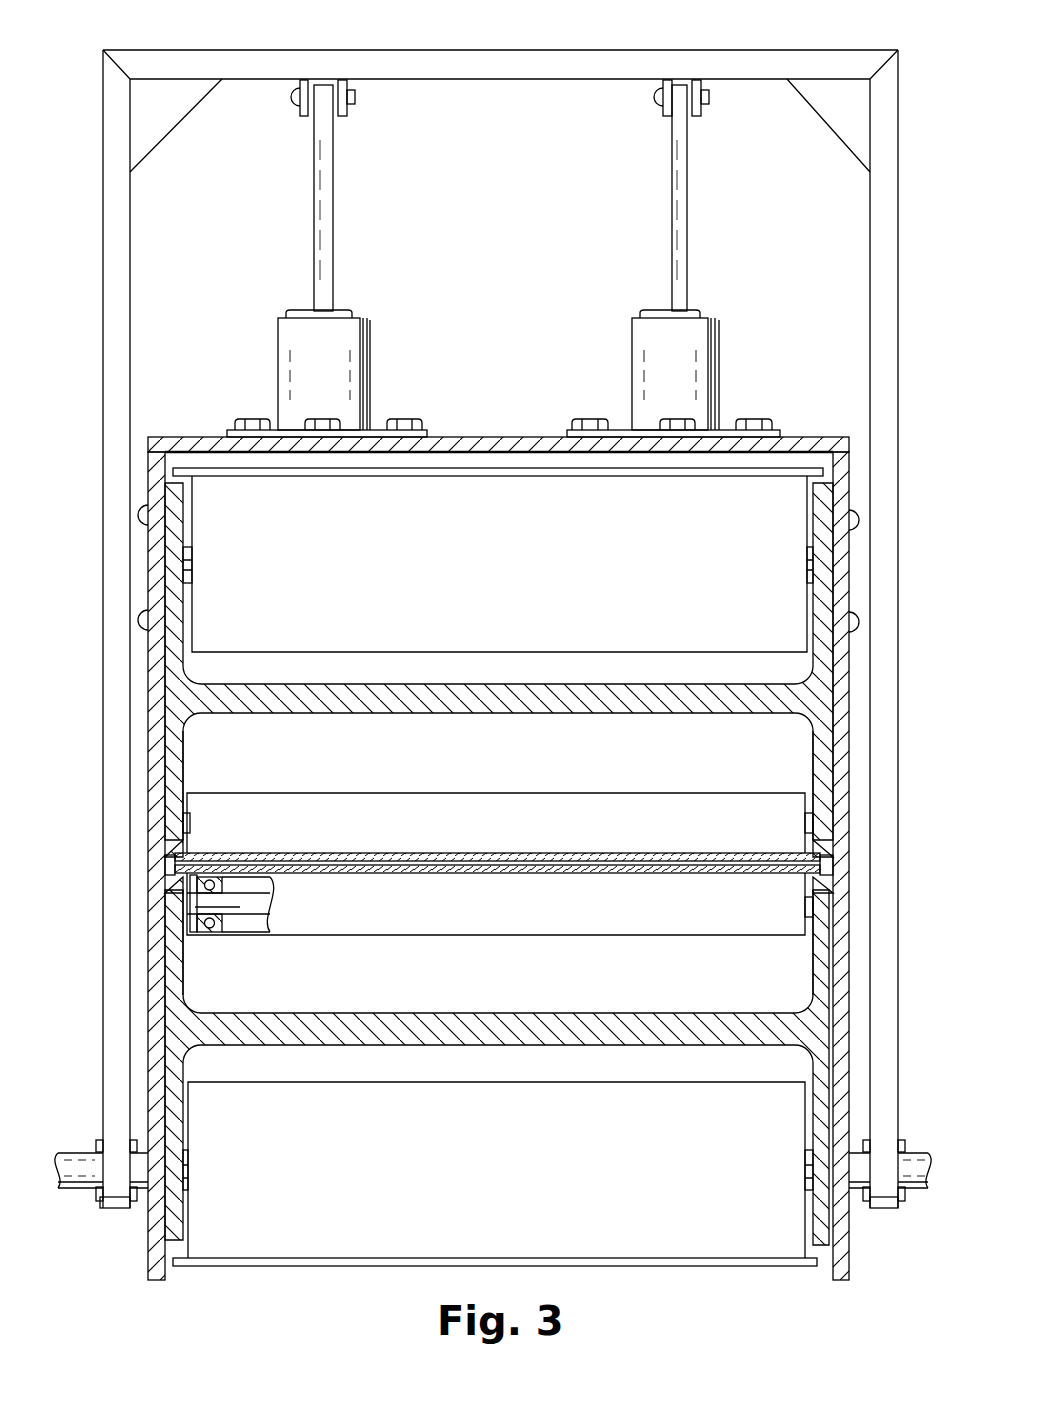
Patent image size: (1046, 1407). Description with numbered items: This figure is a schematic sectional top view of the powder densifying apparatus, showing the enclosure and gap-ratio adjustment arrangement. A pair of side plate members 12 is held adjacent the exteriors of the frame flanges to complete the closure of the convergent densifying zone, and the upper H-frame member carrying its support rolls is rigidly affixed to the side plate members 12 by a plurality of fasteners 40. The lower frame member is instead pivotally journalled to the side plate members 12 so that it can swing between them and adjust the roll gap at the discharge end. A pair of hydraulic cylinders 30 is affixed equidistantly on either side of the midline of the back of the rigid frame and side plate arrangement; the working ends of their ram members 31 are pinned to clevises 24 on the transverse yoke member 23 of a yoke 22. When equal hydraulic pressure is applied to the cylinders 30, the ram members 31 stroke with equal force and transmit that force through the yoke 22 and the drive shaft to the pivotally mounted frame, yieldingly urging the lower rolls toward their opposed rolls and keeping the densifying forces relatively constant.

The yoke 22 is at (612, 48).
The transverse yoke member 23 is at (445, 50).
The clevises 24 is at (348, 113).
The ram members 31 is at (333, 185).
The hydraulic cylinders 30 is at (330, 386).
The side plate members 12 is at (150, 677).
The fasteners 40 is at (858, 623).